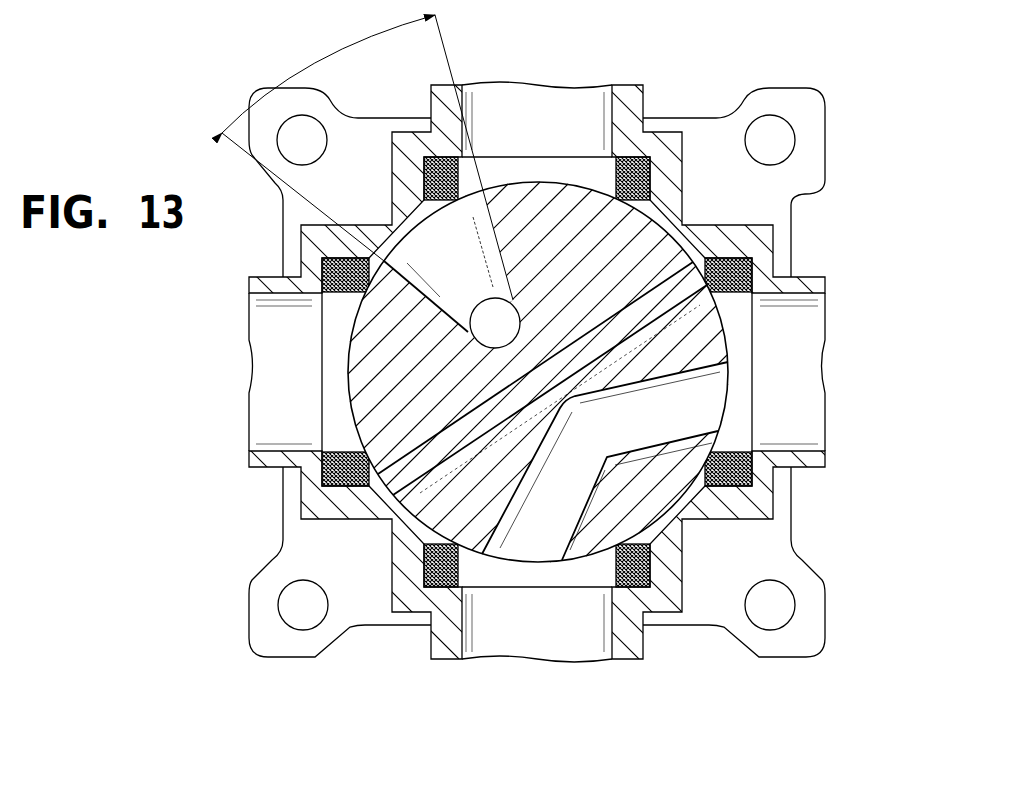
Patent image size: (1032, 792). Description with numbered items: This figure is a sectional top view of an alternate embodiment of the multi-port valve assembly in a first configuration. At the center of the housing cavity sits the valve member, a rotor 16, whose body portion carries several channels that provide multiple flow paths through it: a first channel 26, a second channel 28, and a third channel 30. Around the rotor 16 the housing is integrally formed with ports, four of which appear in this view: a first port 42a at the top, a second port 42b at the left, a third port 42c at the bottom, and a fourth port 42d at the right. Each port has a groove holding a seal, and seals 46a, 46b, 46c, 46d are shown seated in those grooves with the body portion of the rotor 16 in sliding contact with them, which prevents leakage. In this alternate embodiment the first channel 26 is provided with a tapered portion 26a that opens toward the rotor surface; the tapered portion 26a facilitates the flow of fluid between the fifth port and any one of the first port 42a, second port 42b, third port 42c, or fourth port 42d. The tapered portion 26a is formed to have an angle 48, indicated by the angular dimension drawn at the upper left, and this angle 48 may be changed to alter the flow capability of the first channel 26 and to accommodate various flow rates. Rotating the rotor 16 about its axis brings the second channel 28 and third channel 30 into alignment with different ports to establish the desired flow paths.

The rotor 16 is at (372, 398).
The first channel 26 is at (447, 247).
The tapered portion 26a is at (488, 224).
The second channel 28 is at (422, 467).
The third channel 30 is at (700, 402).
The first port 42a is at (545, 115).
The second port 42b is at (270, 358).
The third port 42c is at (560, 628).
The fourth port 42d is at (810, 424).
The seal 46a is at (633, 152).
The seal 46b is at (348, 453).
The seal 46c is at (445, 590).
The seal 46d is at (735, 292).
The angle 48 is at (367, 157).